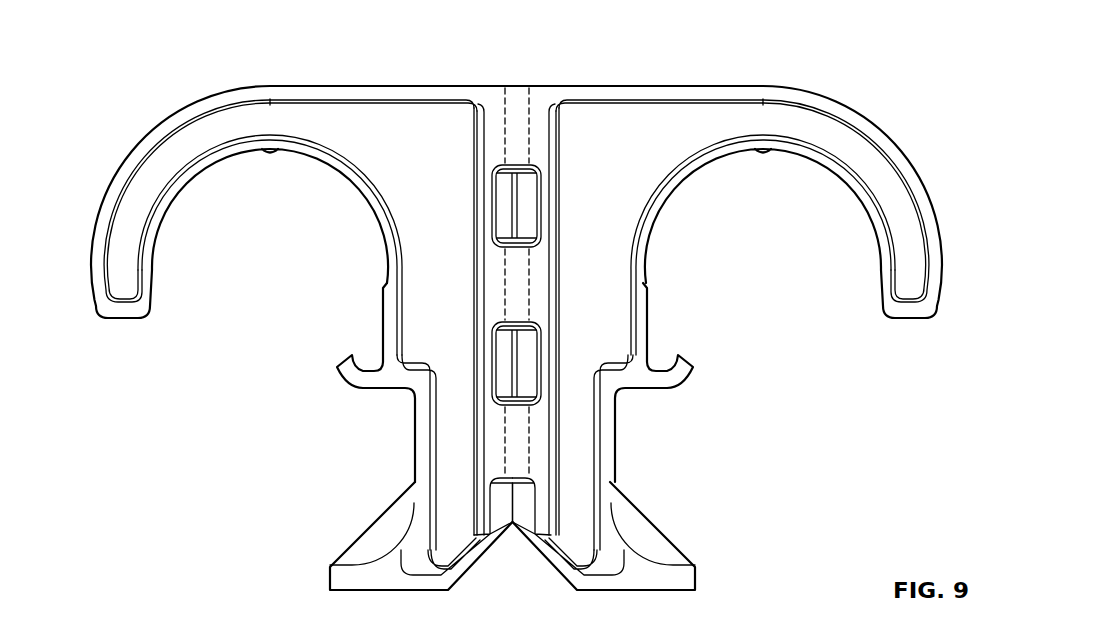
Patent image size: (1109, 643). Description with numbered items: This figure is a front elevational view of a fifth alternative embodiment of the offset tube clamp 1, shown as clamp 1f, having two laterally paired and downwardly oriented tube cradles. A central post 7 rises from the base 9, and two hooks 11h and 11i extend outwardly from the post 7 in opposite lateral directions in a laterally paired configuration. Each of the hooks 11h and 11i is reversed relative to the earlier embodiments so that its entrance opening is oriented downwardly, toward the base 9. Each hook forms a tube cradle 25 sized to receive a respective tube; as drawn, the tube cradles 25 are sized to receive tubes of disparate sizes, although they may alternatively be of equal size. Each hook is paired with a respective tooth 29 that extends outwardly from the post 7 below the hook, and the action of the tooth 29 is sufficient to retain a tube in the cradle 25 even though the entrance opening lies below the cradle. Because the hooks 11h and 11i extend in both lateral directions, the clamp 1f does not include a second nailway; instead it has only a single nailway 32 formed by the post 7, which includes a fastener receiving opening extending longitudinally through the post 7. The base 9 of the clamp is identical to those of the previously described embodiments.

The clamp 1 is at (155, 42).
The clamp 1f is at (293, 86).
The hook 11h is at (165, 118).
The hook 11i is at (900, 143).
The tube cradle 25 is at (200, 172).
The tooth 29 is at (337, 367).
The post 7 is at (559, 258).
The nailway 32 is at (560, 185).
The base 9 is at (662, 530).